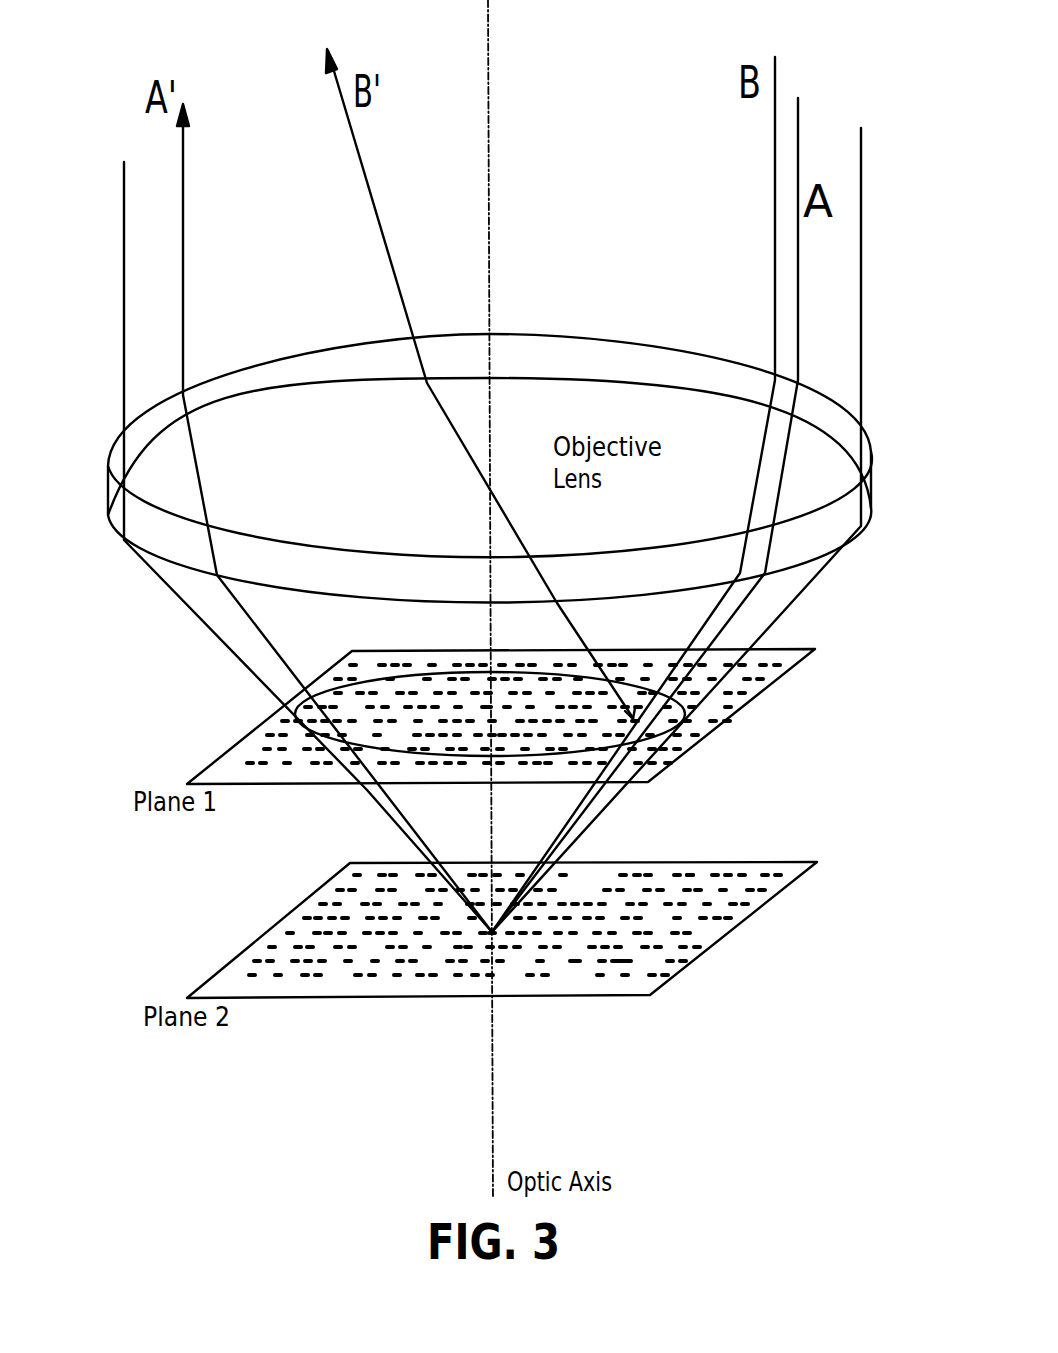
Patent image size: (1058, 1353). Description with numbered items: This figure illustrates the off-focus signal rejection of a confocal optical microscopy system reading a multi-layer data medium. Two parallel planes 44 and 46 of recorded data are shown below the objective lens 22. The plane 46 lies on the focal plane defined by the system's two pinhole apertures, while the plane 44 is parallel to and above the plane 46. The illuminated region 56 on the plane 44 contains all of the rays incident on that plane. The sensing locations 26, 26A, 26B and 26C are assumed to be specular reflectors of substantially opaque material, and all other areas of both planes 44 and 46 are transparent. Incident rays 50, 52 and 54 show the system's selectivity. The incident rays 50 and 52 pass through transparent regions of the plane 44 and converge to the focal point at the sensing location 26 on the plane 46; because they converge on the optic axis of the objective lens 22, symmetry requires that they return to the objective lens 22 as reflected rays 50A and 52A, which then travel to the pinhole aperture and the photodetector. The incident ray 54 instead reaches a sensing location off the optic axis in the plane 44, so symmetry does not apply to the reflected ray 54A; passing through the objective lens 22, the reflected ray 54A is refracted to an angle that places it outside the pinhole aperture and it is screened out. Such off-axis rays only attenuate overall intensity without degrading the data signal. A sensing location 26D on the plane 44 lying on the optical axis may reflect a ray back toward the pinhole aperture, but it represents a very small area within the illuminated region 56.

The objective lens 22 is at (873, 493).
The sensing location 26 is at (492, 932).
The sensing location 26A is at (627, 960).
The sensing location 26B is at (575, 962).
The sensing location 26C is at (687, 873).
The sensing location 26D is at (493, 705).
The plane 44 is at (757, 688).
The plane 46 is at (768, 905).
The incident ray 50 is at (861, 158).
The reflected ray 50A is at (124, 247).
The incident ray 52 is at (798, 142).
The reflected ray 52A is at (185, 192).
The incident ray 54 is at (775, 192).
The reflected ray 54A is at (373, 195).
The illuminated region 56 is at (418, 672).